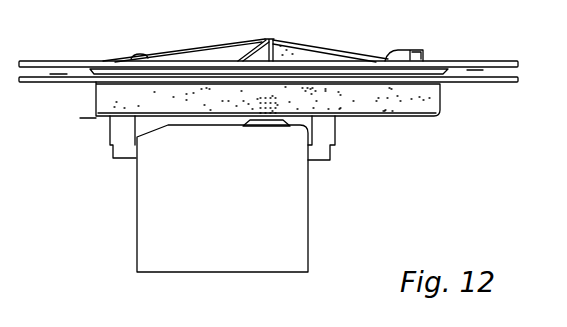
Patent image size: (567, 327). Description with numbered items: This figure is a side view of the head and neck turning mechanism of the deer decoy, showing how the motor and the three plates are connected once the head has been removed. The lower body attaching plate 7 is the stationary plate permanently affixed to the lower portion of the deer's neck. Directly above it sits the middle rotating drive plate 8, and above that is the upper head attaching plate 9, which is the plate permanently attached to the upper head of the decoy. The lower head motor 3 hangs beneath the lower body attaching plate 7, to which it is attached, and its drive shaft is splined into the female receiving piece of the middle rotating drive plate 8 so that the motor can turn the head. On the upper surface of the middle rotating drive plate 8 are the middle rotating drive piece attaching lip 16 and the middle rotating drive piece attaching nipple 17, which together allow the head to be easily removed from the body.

The lower head motor 3 is at (268, 197).
The lower body attaching plate 7 is at (487, 82).
The middle rotating drive plate 8 is at (196, 71).
The upper head attaching plate 9 is at (497, 62).
The middle rotating drive piece attaching lip 16 is at (410, 52).
The middle rotating drive piece attaching nipple 17 is at (137, 56).